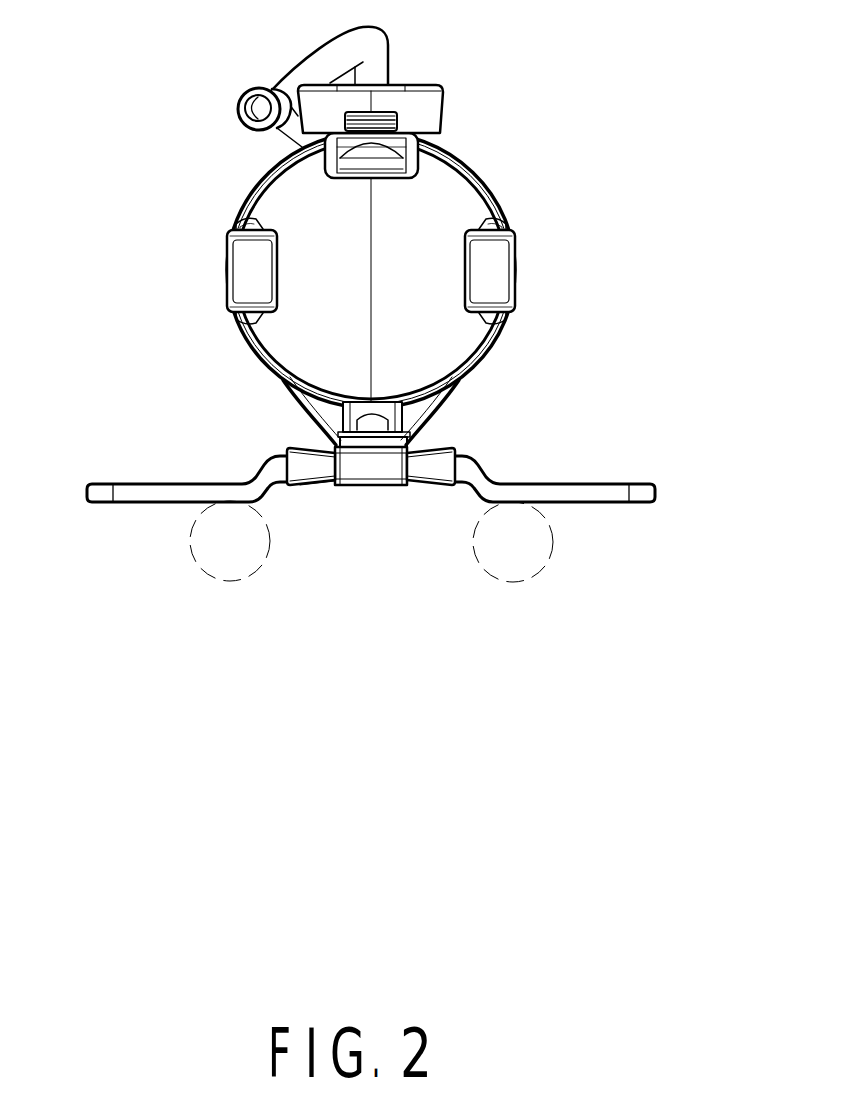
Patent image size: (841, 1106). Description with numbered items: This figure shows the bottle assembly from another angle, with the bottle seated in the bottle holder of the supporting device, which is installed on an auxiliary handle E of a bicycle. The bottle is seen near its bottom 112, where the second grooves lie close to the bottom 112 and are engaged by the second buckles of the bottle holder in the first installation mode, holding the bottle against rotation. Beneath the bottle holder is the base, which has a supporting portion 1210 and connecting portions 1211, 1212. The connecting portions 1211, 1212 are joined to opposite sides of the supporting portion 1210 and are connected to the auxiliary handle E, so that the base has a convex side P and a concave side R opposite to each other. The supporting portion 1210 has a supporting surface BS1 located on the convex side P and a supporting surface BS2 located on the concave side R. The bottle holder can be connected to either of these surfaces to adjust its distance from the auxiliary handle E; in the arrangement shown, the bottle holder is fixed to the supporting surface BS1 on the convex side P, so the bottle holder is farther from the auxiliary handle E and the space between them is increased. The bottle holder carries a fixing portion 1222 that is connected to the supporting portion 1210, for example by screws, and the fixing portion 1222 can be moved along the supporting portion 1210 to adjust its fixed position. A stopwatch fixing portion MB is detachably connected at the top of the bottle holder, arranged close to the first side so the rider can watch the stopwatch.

The stopwatch fixing portion MB is at (423, 107).
The bottom 112 is at (405, 298).
The fixing portion 1222 is at (397, 442).
The convex side P is at (438, 452).
The connecting portion 1211 is at (600, 495).
The connecting portion 1212 is at (136, 495).
The supporting surface BS1 is at (311, 445).
The concave side R is at (317, 487).
The supporting portion 1210 is at (437, 490).
The supporting surface BS2 is at (372, 490).
The auxiliary handle E is at (222, 580).